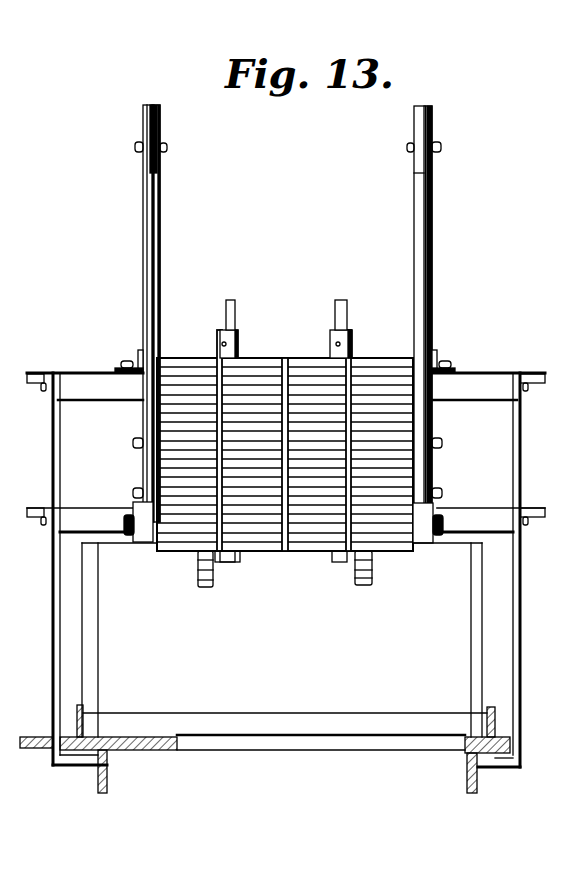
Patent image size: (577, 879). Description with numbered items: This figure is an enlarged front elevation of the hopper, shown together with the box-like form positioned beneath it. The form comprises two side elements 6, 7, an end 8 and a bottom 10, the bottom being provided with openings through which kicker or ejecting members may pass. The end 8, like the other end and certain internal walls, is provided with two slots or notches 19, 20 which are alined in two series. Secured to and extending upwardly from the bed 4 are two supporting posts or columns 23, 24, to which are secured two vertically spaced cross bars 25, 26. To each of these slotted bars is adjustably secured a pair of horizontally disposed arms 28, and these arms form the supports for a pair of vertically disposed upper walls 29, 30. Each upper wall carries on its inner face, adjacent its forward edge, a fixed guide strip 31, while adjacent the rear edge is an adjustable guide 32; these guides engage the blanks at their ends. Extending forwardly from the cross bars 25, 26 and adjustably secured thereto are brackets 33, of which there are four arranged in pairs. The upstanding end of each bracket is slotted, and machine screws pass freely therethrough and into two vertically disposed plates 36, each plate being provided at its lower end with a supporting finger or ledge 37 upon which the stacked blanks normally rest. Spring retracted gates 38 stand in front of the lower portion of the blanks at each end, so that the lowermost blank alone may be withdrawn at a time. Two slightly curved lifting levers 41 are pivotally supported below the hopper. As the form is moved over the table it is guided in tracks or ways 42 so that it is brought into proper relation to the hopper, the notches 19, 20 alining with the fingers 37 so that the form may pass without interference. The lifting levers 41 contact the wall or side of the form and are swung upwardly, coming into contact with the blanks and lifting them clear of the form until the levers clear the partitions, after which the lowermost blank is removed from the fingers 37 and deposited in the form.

The bed 4 is at (450, 745).
The side element 6 is at (90, 585).
The side element 7 is at (490, 633).
The end 8 is at (285, 672).
The bottom 10 is at (332, 723).
The slot or notch 19 is at (341, 556).
The slot or notch 20 is at (238, 557).
The supporting post or column 23 is at (62, 441).
The supporting post or column 24 is at (521, 436).
The cross bar 25 is at (487, 513).
The cross bar 26 is at (468, 392).
The horizontally disposed arm 28 is at (134, 364).
The upper wall 29 is at (143, 222).
The upper wall 30 is at (428, 208).
The fixed guide strip 31 is at (153, 277).
The adjustable guide 32 is at (157, 127).
The bracket 33 is at (240, 342).
The vertically disposed plate 36 is at (340, 302).
The supporting finger or ledge 37 is at (237, 557).
The spring retracted gate 38 is at (142, 536).
The lifting lever 41 is at (208, 582).
The track or way 42 is at (482, 722).